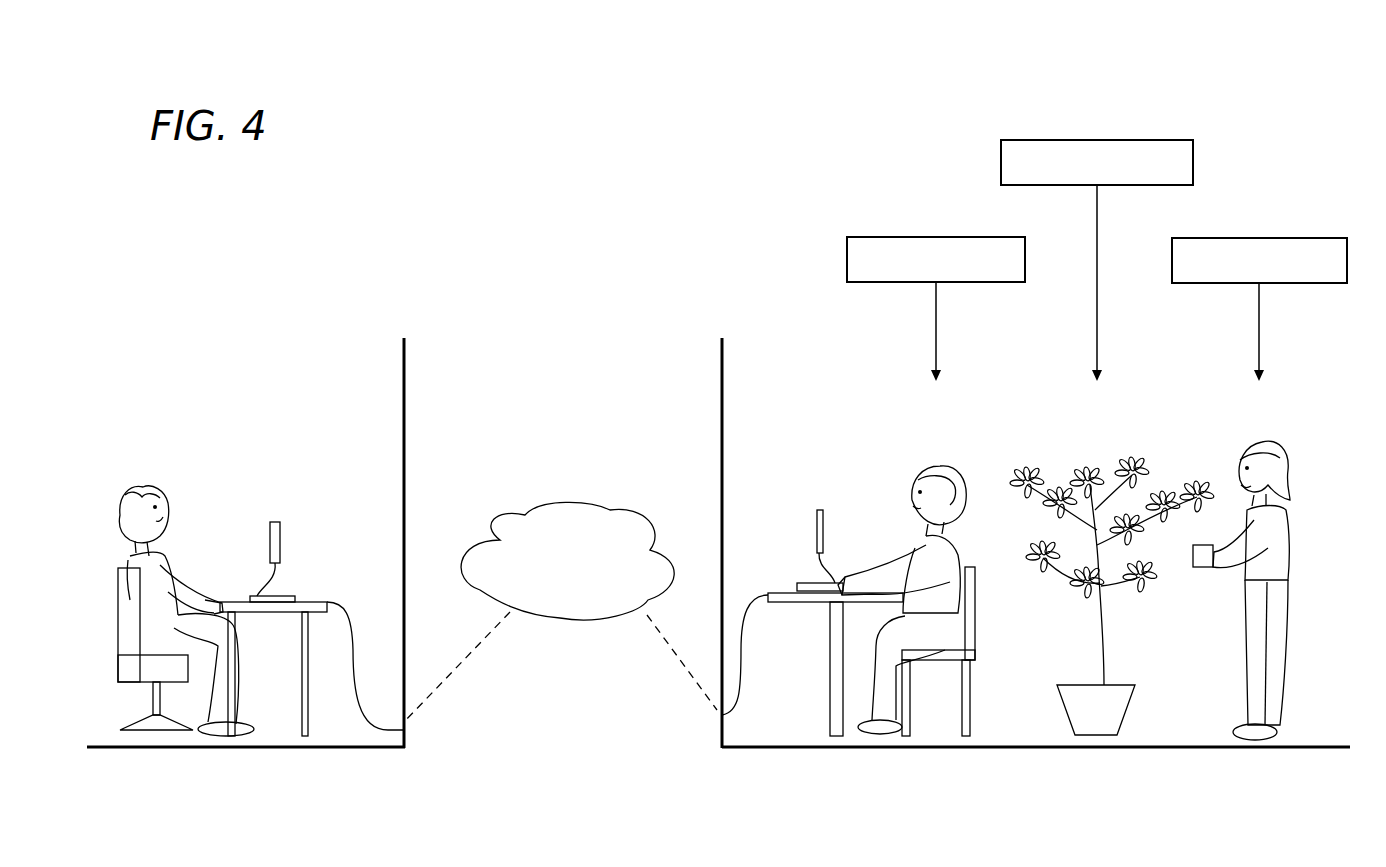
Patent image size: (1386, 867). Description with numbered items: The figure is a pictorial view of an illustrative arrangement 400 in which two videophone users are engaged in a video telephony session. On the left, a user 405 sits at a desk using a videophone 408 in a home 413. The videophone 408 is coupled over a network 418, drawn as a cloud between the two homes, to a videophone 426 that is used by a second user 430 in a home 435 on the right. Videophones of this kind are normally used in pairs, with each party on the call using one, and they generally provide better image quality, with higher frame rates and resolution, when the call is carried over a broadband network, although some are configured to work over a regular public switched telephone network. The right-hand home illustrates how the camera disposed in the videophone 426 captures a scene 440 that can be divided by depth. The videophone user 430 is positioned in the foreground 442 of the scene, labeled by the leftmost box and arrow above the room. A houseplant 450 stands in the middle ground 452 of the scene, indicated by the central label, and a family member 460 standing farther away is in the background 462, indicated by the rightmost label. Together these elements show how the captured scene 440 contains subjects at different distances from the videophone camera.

The arrangement 400 is at (571, 226).
The user 405 is at (167, 461).
The videophone 408 is at (283, 540).
The home 413 is at (342, 748).
The network 418 is at (570, 622).
The videophone 426 is at (810, 530).
The user 430 is at (952, 472).
The home 435 is at (770, 748).
The scene 440 is at (872, 158).
The foreground 442 is at (925, 237).
The houseplant 450 is at (1118, 685).
The middle ground 452 is at (1020, 140).
The family member 460 is at (1288, 446).
The background 462 is at (1321, 238).